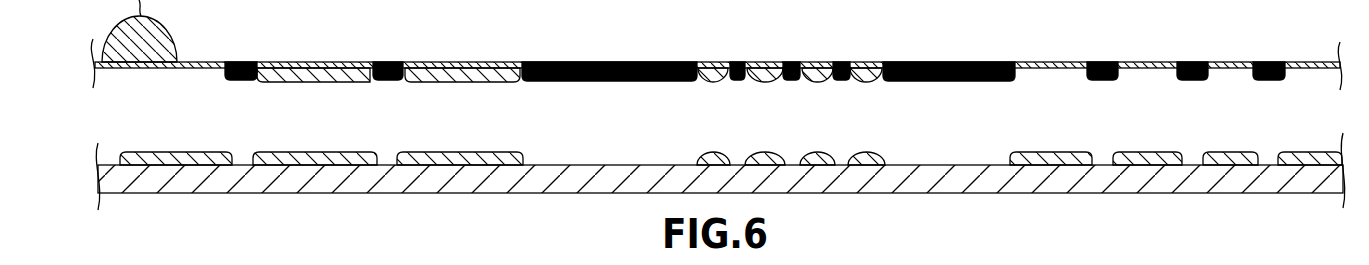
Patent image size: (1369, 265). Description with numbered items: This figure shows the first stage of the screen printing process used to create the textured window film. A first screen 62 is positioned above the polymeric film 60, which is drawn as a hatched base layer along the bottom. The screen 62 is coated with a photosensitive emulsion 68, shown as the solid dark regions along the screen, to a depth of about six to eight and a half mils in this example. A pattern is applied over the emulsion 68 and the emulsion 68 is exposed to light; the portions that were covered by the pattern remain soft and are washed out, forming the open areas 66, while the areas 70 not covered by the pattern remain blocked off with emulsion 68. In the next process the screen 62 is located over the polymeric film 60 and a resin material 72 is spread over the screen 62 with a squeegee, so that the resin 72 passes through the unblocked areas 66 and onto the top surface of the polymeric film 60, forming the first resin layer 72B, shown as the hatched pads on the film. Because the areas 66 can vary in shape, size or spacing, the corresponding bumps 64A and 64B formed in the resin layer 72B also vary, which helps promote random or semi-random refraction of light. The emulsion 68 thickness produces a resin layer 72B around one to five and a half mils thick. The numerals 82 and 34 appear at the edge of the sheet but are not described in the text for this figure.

The polymeric film 60 is at (502, 194).
The first screen 62 is at (120, 70).
The bump 64A is at (517, 151).
The bump 64B is at (714, 152).
The open areas 66 is at (204, 62).
The photosensitive emulsion 68 is at (615, 82).
The blocked areas 70 is at (247, 62).
The resin material 72 is at (337, 82).
The first resin layer 72B is at (181, 152).
The element 82 is at (154, 256).
The element 34 is at (234, 256).